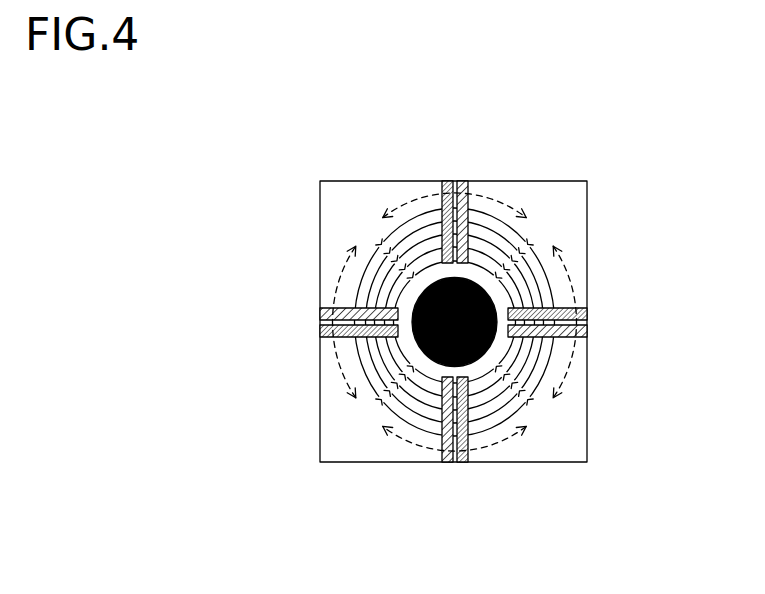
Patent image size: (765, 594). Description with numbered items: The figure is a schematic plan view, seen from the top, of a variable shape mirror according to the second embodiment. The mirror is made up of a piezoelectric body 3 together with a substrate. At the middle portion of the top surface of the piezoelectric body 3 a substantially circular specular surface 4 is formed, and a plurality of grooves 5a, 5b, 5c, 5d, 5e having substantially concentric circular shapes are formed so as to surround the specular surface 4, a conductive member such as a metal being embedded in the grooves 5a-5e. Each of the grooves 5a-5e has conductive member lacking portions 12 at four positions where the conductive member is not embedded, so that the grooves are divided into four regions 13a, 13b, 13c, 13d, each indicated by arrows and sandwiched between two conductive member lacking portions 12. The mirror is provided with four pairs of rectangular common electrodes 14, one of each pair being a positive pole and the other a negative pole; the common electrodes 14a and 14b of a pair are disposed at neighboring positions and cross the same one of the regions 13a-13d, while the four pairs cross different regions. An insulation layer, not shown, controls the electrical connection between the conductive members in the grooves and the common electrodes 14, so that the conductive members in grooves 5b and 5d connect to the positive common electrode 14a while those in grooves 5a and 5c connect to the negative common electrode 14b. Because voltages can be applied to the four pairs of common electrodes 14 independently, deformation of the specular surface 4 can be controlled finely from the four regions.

The piezoelectric body 3 is at (573, 202).
The specular surface 4 is at (572, 340).
The groove 5a is at (472, 437).
The groove 5b is at (485, 418).
The groove 5c is at (484, 404).
The groove 5d is at (483, 390).
The groove 5e is at (487, 374).
The conductive member lacking portion 12 is at (372, 237).
The region 13a is at (571, 275).
The region 13b is at (410, 203).
The region 13c is at (340, 277).
The region 13d is at (397, 437).
The common electrode 14 is at (462, 321).
The common electrode 14a is at (447, 181).
The common electrode 14b is at (467, 181).